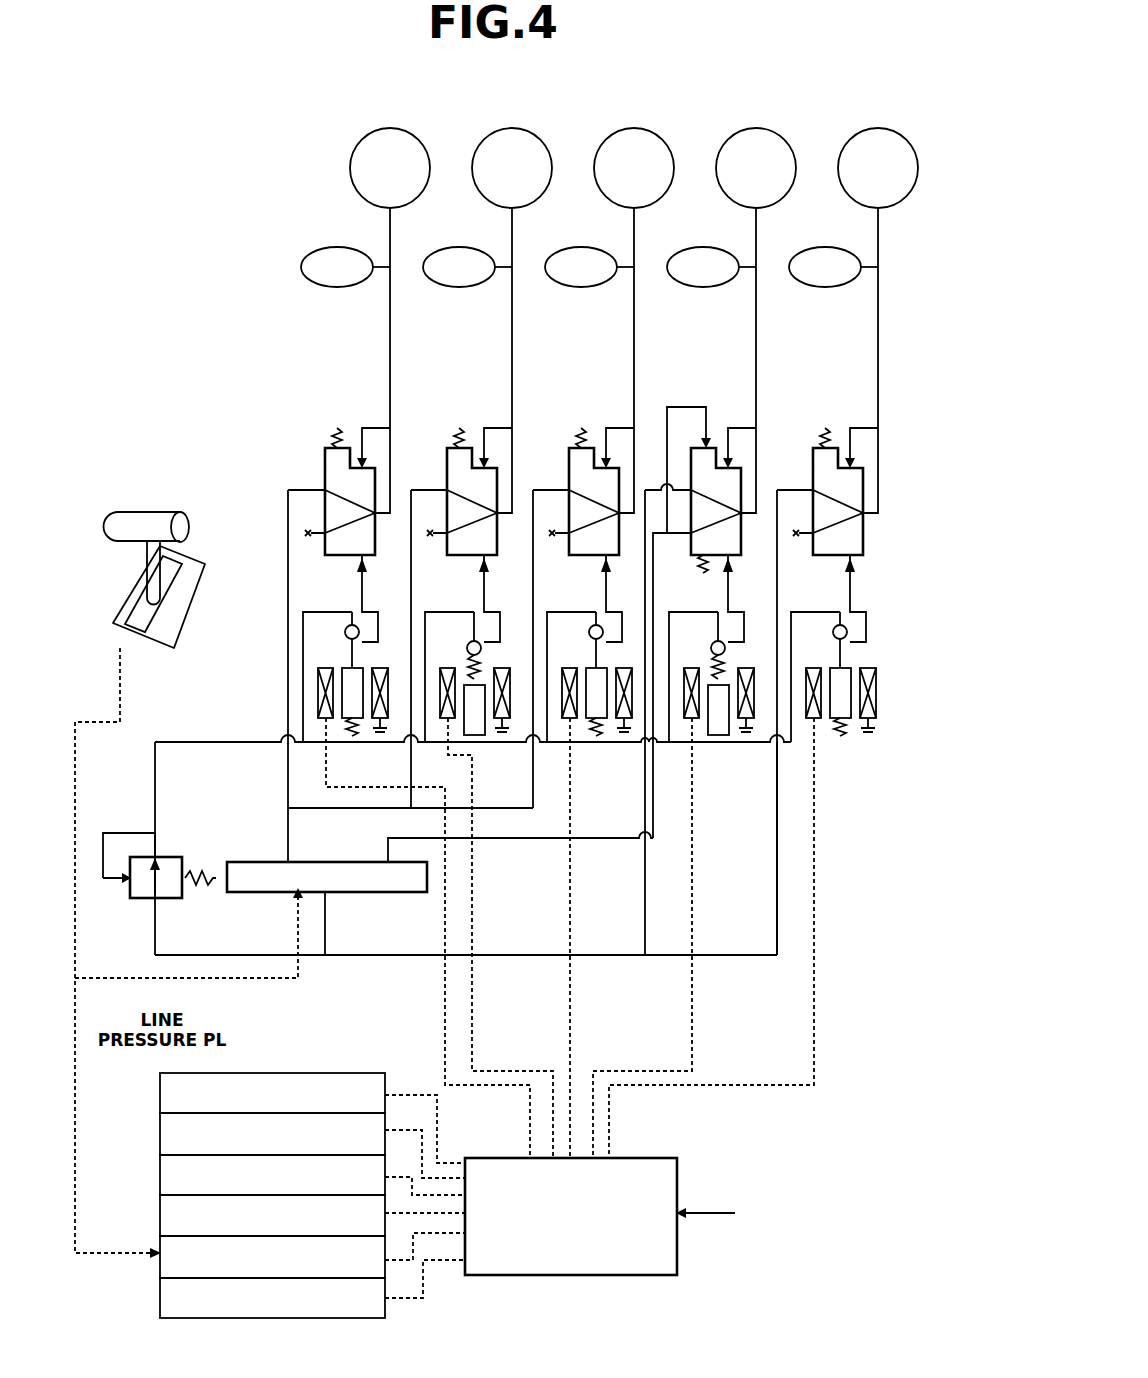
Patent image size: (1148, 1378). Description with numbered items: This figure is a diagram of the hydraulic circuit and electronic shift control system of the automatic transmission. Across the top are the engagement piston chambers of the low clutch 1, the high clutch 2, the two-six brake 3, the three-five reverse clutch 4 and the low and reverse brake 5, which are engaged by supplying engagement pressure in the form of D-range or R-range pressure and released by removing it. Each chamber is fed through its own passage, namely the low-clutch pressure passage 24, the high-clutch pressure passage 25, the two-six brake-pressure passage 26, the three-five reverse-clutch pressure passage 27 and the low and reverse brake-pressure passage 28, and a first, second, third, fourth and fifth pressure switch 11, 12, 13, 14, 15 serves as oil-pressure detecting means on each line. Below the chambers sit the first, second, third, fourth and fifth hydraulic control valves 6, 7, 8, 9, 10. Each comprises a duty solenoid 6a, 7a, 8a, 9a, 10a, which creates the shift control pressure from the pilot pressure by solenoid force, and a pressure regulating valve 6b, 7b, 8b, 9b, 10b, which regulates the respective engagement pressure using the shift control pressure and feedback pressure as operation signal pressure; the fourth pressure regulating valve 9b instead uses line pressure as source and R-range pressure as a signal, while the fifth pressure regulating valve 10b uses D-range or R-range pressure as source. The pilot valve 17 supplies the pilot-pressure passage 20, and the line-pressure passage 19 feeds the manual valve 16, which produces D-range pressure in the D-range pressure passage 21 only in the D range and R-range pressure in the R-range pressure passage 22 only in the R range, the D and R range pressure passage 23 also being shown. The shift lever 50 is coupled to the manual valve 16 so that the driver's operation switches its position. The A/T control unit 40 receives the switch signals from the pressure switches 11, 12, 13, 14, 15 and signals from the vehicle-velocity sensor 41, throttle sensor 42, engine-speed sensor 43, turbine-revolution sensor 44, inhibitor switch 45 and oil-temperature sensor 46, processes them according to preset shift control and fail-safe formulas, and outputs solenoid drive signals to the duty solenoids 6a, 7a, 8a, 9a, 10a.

The engagement piston chamber of the low clutch 1 is at (390, 128).
The engagement piston chamber of the high clutch 2 is at (512, 128).
The engagement piston chamber of the 2-6 brake 3 is at (634, 128).
The engagement piston chamber of the 3-5 reverse clutch 4 is at (756, 128).
The engagement piston chamber of the low & reverse brake 5 is at (878, 128).
The first hydraulic control valve 6 is at (346, 411).
The second hydraulic control valve 7 is at (468, 411).
The third hydraulic control valve 8 is at (590, 411).
The fourth hydraulic control valve 9 is at (669, 400).
The fifth hydraulic control valve 10 is at (835, 411).
The first duty solenoid 6a is at (350, 610).
The second duty solenoid 7a is at (472, 610).
The third duty solenoid 8a is at (594, 610).
The fourth duty solenoid 9a is at (709, 610).
The fifth duty solenoid 10a is at (836, 610).
The first pressure regulating valve 6b is at (318, 446).
The second pressure regulating valve 7b is at (440, 446).
The third pressure regulating valve 8b is at (562, 446).
The fourth pressure regulating valve 9b is at (730, 414).
The fifth pressure regulating valve 10b is at (813, 448).
The first pressure switch 11 is at (343, 247).
The second pressure switch 12 is at (465, 247).
The third pressure switch 13 is at (587, 247).
The fourth pressure switch 14 is at (709, 247).
The fifth pressure switch 15 is at (831, 247).
The manual valve 16 is at (388, 892).
The pilot valve 17 is at (172, 852).
The line-pressure passage 19 is at (229, 955).
The pilot-pressure passage 20 is at (213, 742).
The D-range pressure passage 21 is at (508, 808).
The R-range pressure passage 22 is at (613, 838).
The D & R range pressure passage 23 is at (777, 840).
The low-clutch pressure passage 24 is at (390, 323).
The high-clutch pressure passage 25 is at (512, 323).
The 2-6 brake-pressure passage 26 is at (634, 323).
The 3-5 reverse-clutch pressure passage 27 is at (757, 323).
The low & reverse brake-pressure passage 28 is at (878, 323).
The A/T control unit 40 is at (662, 1158).
The vehicle-velocity sensor 41 is at (159, 1095).
The throttle sensor 42 is at (159, 1130).
The engine-speed sensor 43 is at (159, 1172).
The turbine-revolution sensor 44 is at (159, 1210).
The inhibitor switch 45 is at (159, 1244).
The oil-temperature sensor 46 is at (159, 1296).
The shift lever 50 is at (156, 514).